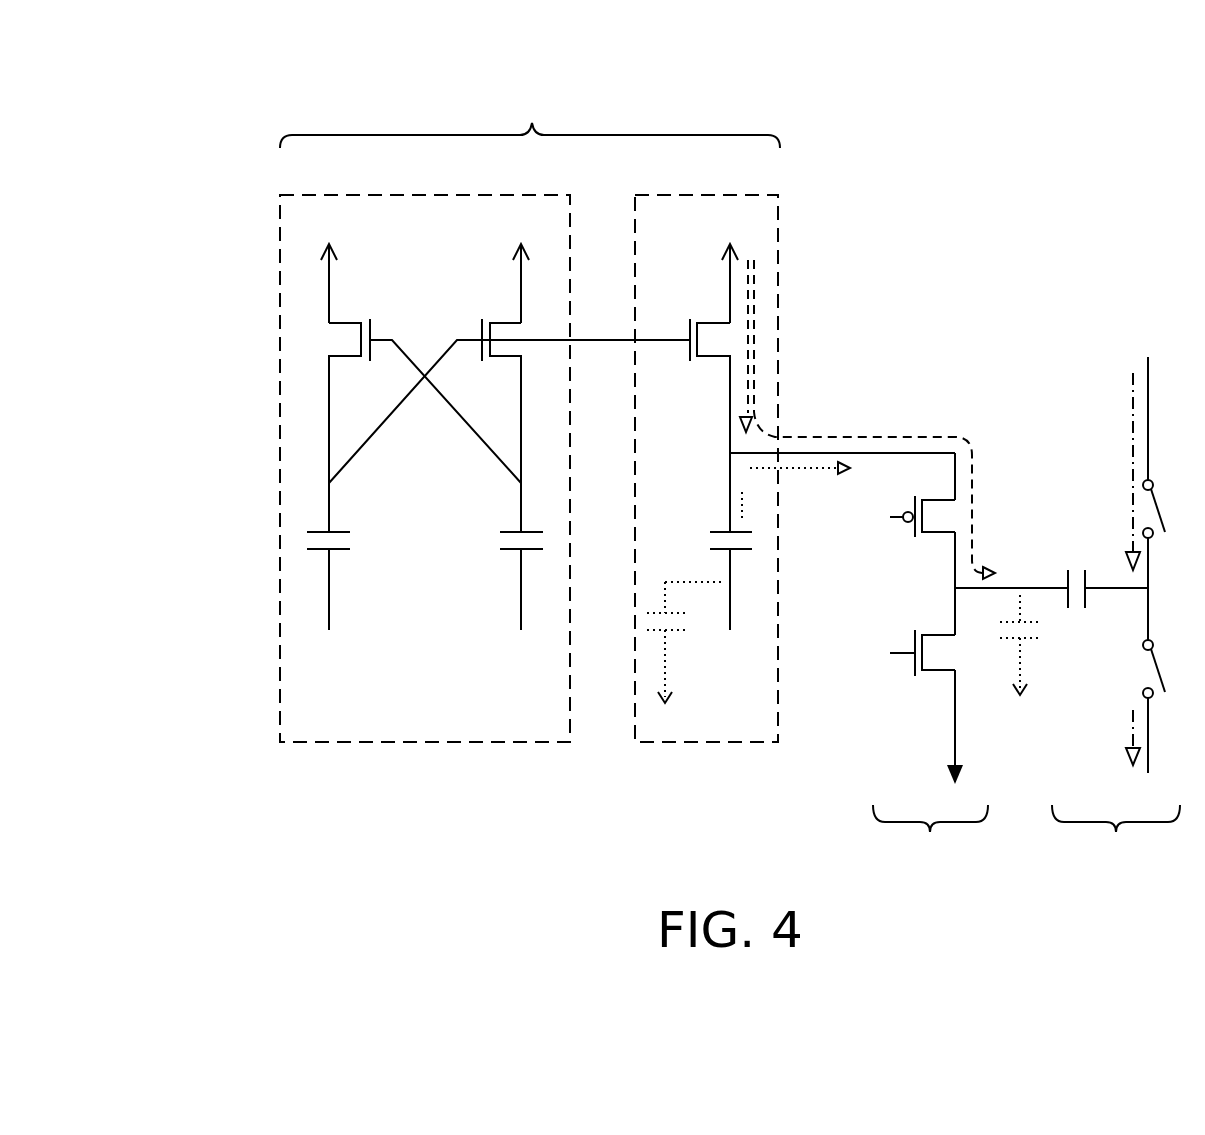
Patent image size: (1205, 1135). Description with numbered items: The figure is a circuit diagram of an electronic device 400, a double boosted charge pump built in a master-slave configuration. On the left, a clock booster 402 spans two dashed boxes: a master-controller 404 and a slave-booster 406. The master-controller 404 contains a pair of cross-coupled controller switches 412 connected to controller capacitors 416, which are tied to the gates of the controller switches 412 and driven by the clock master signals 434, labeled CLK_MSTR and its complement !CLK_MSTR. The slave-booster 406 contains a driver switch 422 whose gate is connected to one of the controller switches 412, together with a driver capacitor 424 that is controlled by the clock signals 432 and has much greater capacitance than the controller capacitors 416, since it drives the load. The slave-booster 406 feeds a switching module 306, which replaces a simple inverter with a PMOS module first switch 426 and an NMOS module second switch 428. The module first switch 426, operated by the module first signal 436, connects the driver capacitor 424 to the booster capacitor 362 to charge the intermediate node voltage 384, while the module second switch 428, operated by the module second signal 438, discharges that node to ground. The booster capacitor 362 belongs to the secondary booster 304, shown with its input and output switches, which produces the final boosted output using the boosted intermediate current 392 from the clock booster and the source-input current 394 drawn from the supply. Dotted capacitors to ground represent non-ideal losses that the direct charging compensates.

The electronic device 400 is at (399, 84).
The clock booster 402 is at (685, 482).
The master-controller 404 is at (280, 210).
The slave-booster 406 is at (780, 212).
The controller switches 412 is at (508, 322).
The controller capacitors 416 is at (505, 530).
The driver switch 422 is at (700, 323).
The driver capacitor 424 is at (748, 532).
The module first switch 426 is at (917, 532).
The module second switch 428 is at (912, 668).
The clock signals 432 is at (735, 658).
The clock master signals 434 is at (358, 668).
The module first signal 436 is at (843, 528).
The module second signal 438 is at (835, 660).
The boosted intermediate current 392 is at (745, 483).
The source-input current 394 is at (858, 435).
The intermediate node voltage 384 is at (1032, 575).
The booster capacitor 362 is at (1085, 597).
The switching module 306 is at (915, 660).
The secondary booster 304 is at (1116, 612).